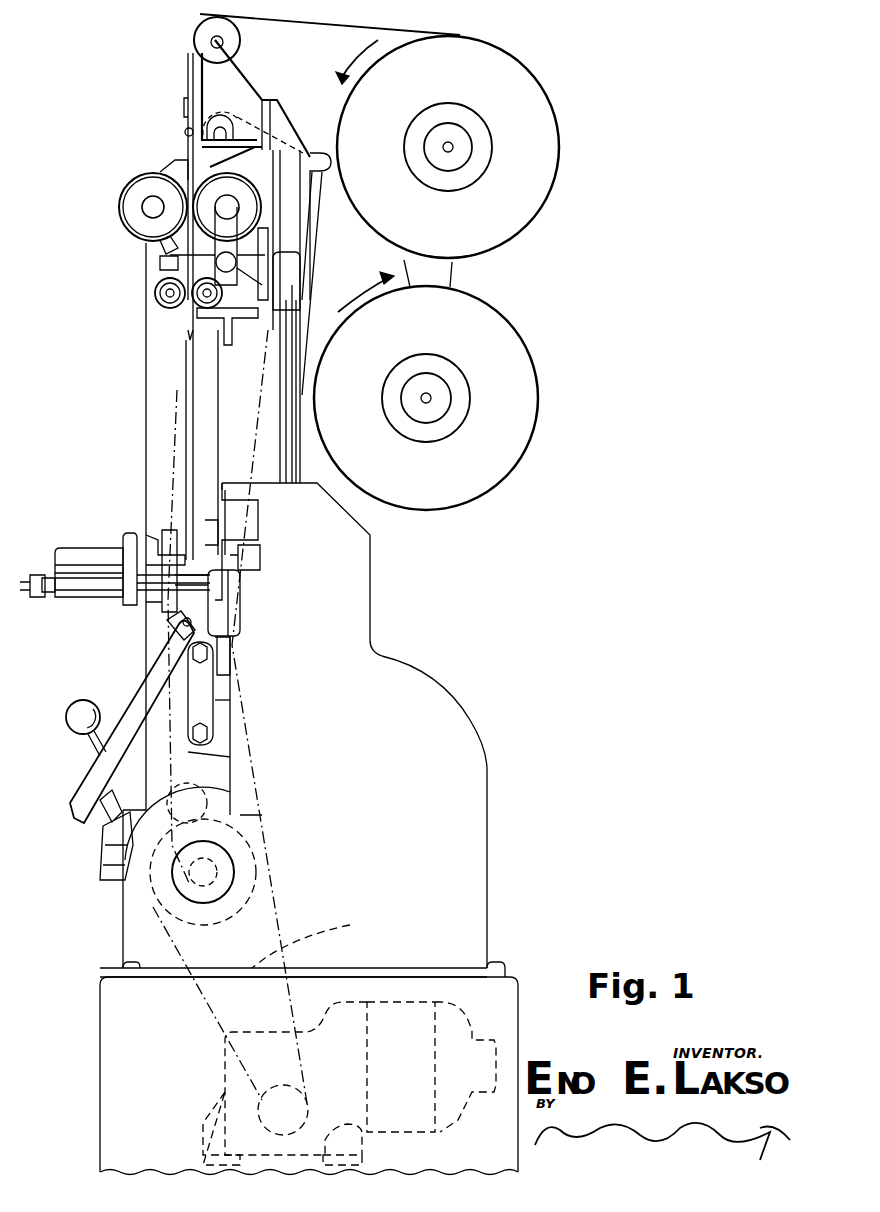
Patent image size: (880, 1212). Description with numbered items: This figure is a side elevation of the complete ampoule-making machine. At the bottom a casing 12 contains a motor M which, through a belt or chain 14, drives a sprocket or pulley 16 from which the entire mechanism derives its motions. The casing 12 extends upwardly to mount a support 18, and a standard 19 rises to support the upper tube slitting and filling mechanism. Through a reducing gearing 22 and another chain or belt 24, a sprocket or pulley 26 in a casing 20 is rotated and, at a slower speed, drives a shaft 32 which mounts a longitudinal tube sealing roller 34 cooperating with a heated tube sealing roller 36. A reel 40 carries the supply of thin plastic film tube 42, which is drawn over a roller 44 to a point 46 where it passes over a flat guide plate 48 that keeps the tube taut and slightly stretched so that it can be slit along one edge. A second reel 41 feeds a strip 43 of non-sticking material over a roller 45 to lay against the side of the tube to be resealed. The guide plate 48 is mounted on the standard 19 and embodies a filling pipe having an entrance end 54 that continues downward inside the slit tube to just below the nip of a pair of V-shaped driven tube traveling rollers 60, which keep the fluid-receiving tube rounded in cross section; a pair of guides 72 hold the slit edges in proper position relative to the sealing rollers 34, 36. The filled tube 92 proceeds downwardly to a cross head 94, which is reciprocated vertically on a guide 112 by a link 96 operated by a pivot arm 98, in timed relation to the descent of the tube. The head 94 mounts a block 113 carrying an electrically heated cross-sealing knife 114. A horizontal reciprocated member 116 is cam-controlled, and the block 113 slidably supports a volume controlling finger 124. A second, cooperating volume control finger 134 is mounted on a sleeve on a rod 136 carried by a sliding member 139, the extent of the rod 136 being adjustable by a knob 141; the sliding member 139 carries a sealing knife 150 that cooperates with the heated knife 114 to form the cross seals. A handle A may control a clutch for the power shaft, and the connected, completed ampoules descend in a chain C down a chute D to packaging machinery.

The casing 12 is at (105, 1103).
The belt or chain 14 is at (316, 934).
The sprocket or pulley 16 is at (262, 840).
The support 18 is at (452, 720).
The standard 19 is at (290, 405).
The casing 20 is at (148, 354).
The reducing gearing 22 is at (218, 912).
The chain or belt 24 is at (175, 408).
The sprocket or pulley 26 is at (258, 234).
The shaft 32 is at (145, 205).
The longitudinal tube sealing roller 34 is at (130, 222).
The heated tube sealing roller 36 is at (247, 196).
The reel 40 is at (550, 158).
The reel 41 is at (530, 388).
The tube 42 is at (293, 28).
The strip of non-sticking material 43 is at (318, 250).
The roller 44 is at (196, 37).
The roller 45 is at (222, 113).
The point 46 is at (188, 78).
The guide plate 48 is at (187, 108).
The entrance end 54 is at (185, 130).
The driven tube traveling rollers 60 is at (155, 294).
The guides 72 is at (185, 165).
The filled tube 92 is at (193, 435).
The cross head 94 is at (240, 617).
The link 96 is at (205, 690).
The pivot arm 98 is at (226, 727).
The guide 112 is at (218, 510).
The block 113 is at (258, 556).
The heated cross-sealing knife 114 is at (255, 532).
The horizontal reciprocated member 116 is at (145, 598).
The volume controlling finger or plate 124 is at (250, 575).
The volume control finger 134 is at (138, 562).
The rod 136 is at (40, 575).
The sliding member 139 is at (62, 548).
The knob 141 is at (32, 598).
The sealing knife 150 is at (150, 530).
The handle A is at (67, 716).
The chain C is at (170, 630).
The chute D is at (72, 796).
The motor M is at (410, 1128).